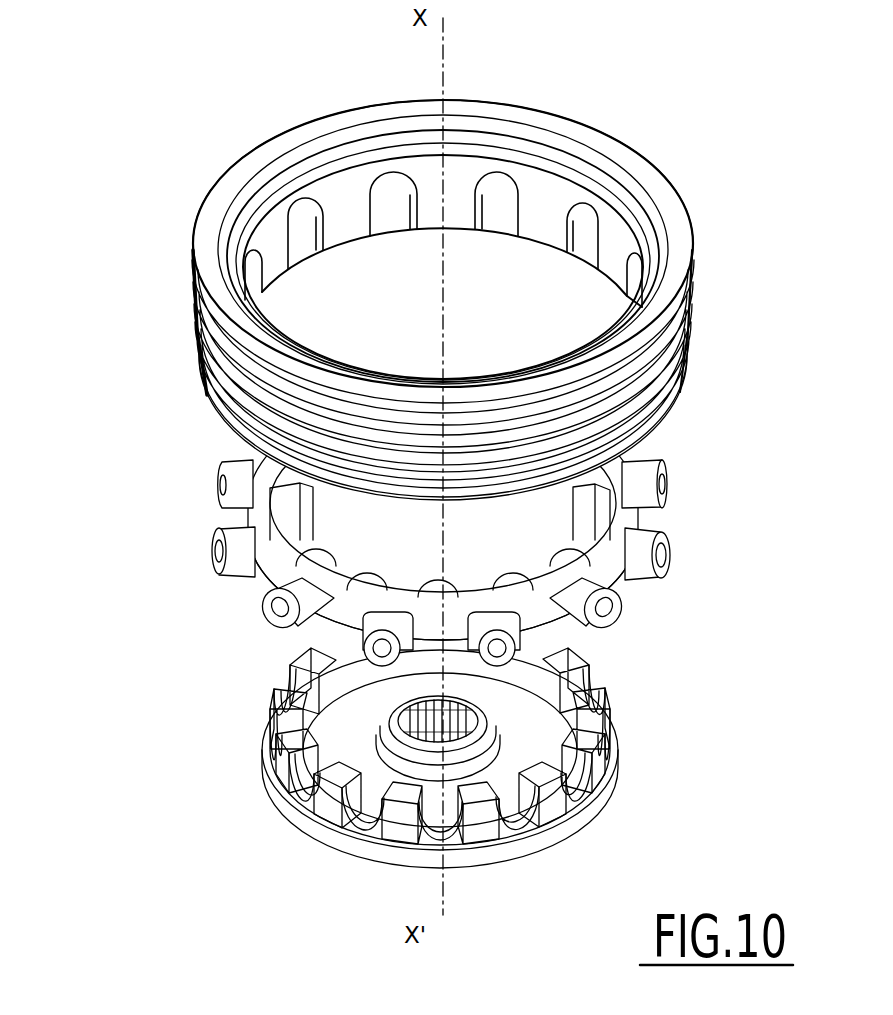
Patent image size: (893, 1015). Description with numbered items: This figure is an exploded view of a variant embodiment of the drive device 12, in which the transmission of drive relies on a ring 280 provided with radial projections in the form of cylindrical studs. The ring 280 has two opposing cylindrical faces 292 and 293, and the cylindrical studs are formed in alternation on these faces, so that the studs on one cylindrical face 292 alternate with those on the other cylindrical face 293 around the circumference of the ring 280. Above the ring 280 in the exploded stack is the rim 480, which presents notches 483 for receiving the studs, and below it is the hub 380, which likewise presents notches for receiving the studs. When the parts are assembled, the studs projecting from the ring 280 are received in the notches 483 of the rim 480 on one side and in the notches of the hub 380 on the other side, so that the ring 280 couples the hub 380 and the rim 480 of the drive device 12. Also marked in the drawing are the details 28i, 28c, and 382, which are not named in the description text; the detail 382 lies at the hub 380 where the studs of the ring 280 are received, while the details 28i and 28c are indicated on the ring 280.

The drive device 12 is at (426, 481).
The rim 480 is at (491, 274).
The notches 483 is at (505, 196).
The ring 280 is at (468, 529).
The cylindrical face 292 is at (408, 590).
The inner elastic members 28i is at (556, 572).
The outer elastic members 28c is at (664, 574).
The cylindrical face 293 is at (253, 588).
The hub 380 is at (500, 781).
The roller seat notch 382 is at (480, 822).